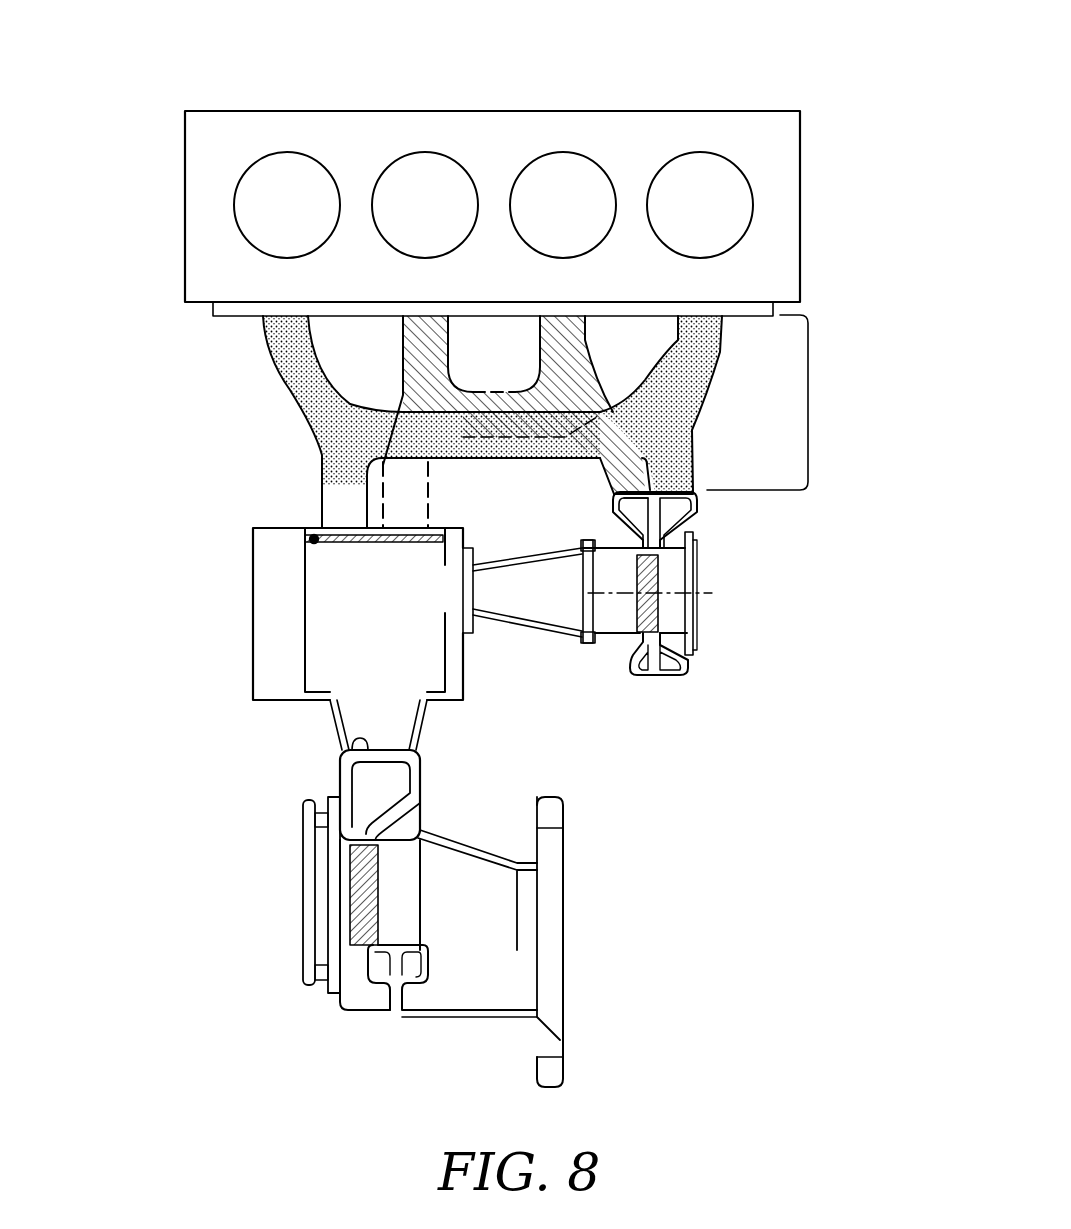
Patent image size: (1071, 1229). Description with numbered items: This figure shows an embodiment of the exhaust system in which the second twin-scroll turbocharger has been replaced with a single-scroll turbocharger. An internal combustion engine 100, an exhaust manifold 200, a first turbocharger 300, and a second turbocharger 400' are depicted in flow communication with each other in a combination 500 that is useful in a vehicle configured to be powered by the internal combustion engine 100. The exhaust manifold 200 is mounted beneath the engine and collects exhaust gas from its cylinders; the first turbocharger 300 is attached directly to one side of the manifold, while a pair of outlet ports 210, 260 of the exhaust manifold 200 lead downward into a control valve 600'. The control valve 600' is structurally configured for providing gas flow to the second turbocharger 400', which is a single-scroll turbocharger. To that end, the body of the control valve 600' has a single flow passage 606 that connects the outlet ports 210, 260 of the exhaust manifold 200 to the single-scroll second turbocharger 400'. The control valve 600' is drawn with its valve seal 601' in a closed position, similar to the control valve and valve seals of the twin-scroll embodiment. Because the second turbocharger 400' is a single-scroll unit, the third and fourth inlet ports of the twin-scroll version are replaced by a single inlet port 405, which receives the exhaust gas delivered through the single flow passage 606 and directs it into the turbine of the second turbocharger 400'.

The internal combustion engine 100 is at (644, 108).
The combination 500 is at (160, 258).
The exhaust manifold 200 is at (808, 400).
The outlet port 210 is at (320, 490).
The outlet port 260 is at (430, 505).
The first turbocharger 300 is at (672, 676).
The control valve 600' is at (361, 639).
The valve seal 601' is at (301, 552).
The single flow passage 606 is at (395, 627).
The single inlet port 405 is at (380, 786).
The second turbocharger 400' is at (428, 928).